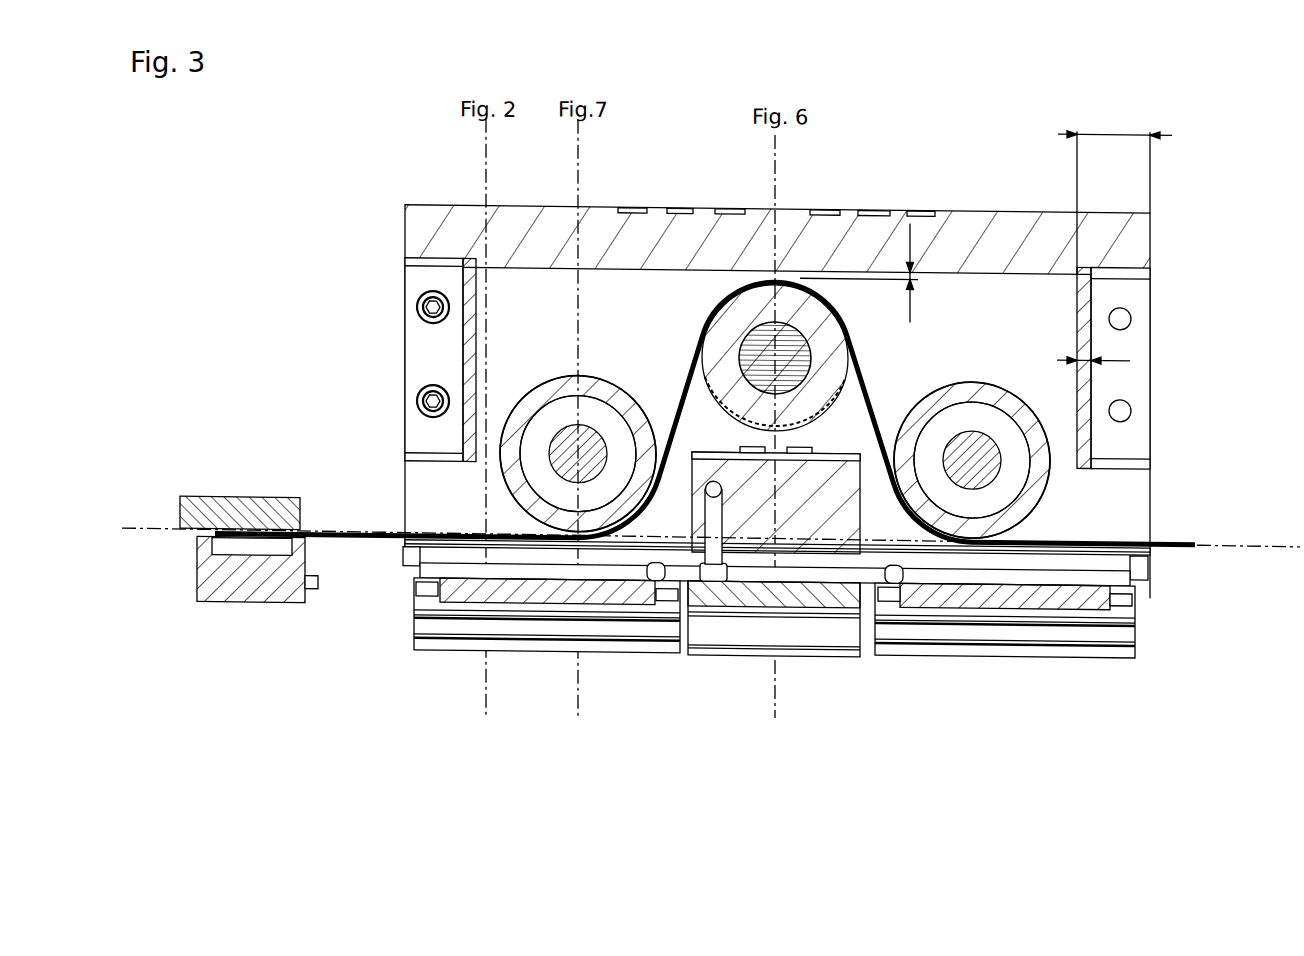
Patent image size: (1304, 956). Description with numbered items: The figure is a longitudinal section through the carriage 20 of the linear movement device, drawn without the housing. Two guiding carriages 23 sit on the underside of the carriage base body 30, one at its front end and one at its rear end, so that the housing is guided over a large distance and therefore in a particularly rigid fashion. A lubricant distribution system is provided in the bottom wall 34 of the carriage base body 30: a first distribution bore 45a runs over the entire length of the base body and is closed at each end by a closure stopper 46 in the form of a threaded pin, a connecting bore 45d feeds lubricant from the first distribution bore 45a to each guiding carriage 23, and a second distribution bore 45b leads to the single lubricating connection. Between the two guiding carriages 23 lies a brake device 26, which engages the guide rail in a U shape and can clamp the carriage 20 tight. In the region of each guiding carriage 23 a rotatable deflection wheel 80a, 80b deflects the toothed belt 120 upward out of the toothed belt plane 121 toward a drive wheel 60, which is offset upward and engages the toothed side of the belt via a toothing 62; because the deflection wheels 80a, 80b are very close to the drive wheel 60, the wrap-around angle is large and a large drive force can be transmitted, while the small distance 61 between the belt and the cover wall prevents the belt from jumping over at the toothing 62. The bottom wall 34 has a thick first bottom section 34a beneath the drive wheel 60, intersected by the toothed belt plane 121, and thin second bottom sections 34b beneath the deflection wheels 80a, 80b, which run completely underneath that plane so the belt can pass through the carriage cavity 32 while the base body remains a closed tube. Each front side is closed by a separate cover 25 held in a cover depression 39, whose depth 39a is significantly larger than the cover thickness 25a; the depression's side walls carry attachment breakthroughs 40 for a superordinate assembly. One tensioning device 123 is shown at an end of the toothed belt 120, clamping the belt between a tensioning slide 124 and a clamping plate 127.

The carriage 20 is at (1222, 143).
The guiding carriage 23 is at (414, 645).
The cover 25 is at (463, 354).
The thickness of the cover 25a is at (1052, 355).
The brake device 26 is at (835, 642).
The carriage base body 30 is at (990, 229).
The carriage cavity 32 is at (652, 312).
The bottom wall 34 is at (772, 584).
The first bottom section 34a is at (767, 483).
The second bottom section 34b is at (522, 609).
The cover depression 39 is at (1113, 276).
The depth of the cover depression 39a is at (1115, 193).
The attachment breakthrough 40 is at (1125, 413).
The first distribution bore 45a is at (973, 566).
The second distribution bore 45b is at (660, 584).
The connecting bore 45d is at (933, 594).
The closure stopper 46 is at (402, 560).
The drive wheel 60 is at (738, 300).
The distance 61 is at (871, 272).
The toothing 62 is at (810, 415).
The deflection wheel 80a is at (560, 394).
The deflection wheel 80b is at (950, 383).
The toothed belt 120 is at (352, 537).
The toothed belt plane 121 is at (693, 533).
The tensioning device 123 is at (185, 477).
The tensioning slide 124 is at (238, 608).
The clamping plate 127 is at (232, 503).